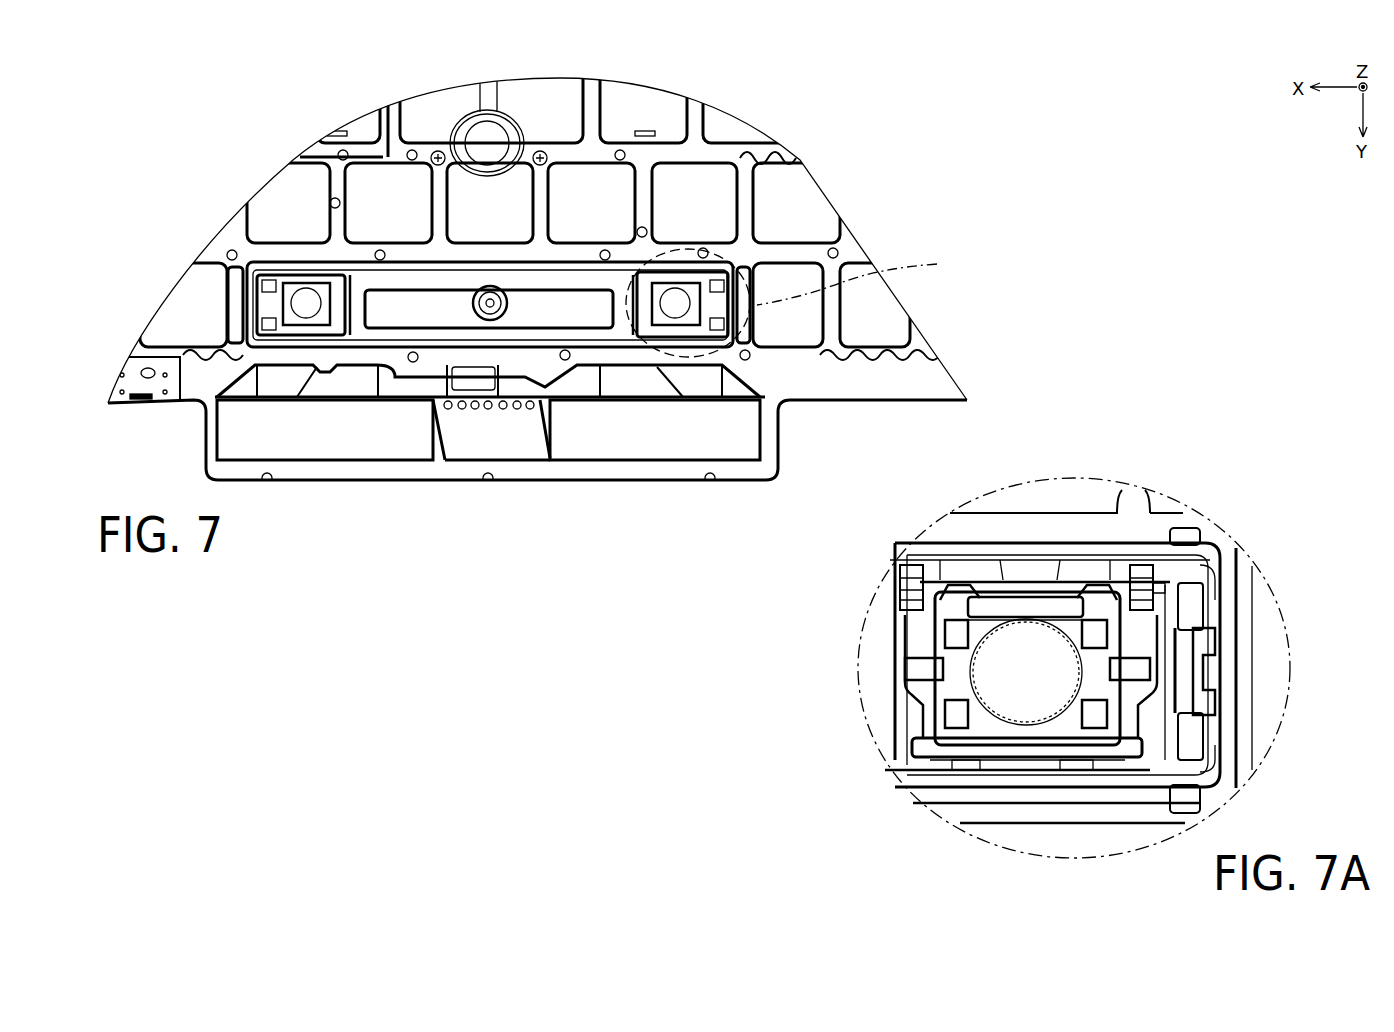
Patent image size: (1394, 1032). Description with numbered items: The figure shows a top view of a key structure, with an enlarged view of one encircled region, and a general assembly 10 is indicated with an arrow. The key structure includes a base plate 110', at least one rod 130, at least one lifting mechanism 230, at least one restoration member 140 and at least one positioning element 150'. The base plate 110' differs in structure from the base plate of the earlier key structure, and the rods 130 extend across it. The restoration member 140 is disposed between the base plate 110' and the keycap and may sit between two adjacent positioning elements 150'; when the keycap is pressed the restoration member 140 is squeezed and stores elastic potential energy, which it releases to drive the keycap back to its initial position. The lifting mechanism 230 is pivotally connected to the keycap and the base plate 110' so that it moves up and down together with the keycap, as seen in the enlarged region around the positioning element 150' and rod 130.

In FIG. 7, the electronic device housing assembly 10 is at (900, 135).
In FIG. 7, the restoration member 140 is at (488, 320).
In FIG. 7A, the base plate 110' is at (1066, 464).
In FIG. 7A, the rod 130 is at (1032, 548).
In FIG. 7A, the positioning element 150' is at (1259, 668).
In FIG. 7A, the lifting mechanism 230 is at (932, 747).